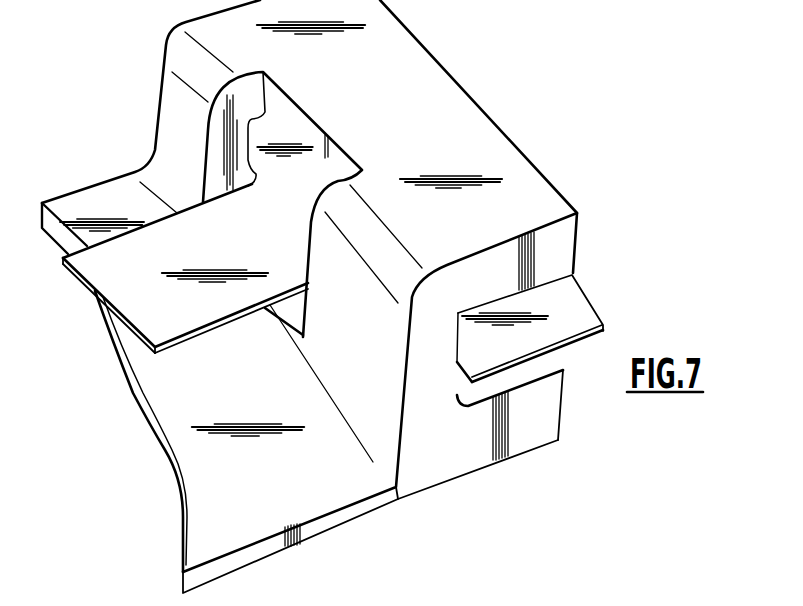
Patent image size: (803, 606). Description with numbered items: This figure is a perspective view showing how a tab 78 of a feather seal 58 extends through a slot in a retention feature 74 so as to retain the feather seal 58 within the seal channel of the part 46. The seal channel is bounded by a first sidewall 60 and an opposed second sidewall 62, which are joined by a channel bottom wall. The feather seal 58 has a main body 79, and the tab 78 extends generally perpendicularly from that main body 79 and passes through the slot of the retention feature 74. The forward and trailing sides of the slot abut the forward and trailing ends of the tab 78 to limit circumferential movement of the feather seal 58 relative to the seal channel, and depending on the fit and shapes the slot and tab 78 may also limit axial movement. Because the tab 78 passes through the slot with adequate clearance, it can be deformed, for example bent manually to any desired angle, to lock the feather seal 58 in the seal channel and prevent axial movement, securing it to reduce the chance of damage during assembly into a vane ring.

The bracket 46 is at (105, 87).
The feather seal 58 is at (234, 320).
The first sidewall 60 is at (528, 197).
The second sidewall 62 is at (543, 368).
The retention feature 74 is at (331, 105).
The tab 78 is at (135, 281).
The main body 79 is at (575, 313).